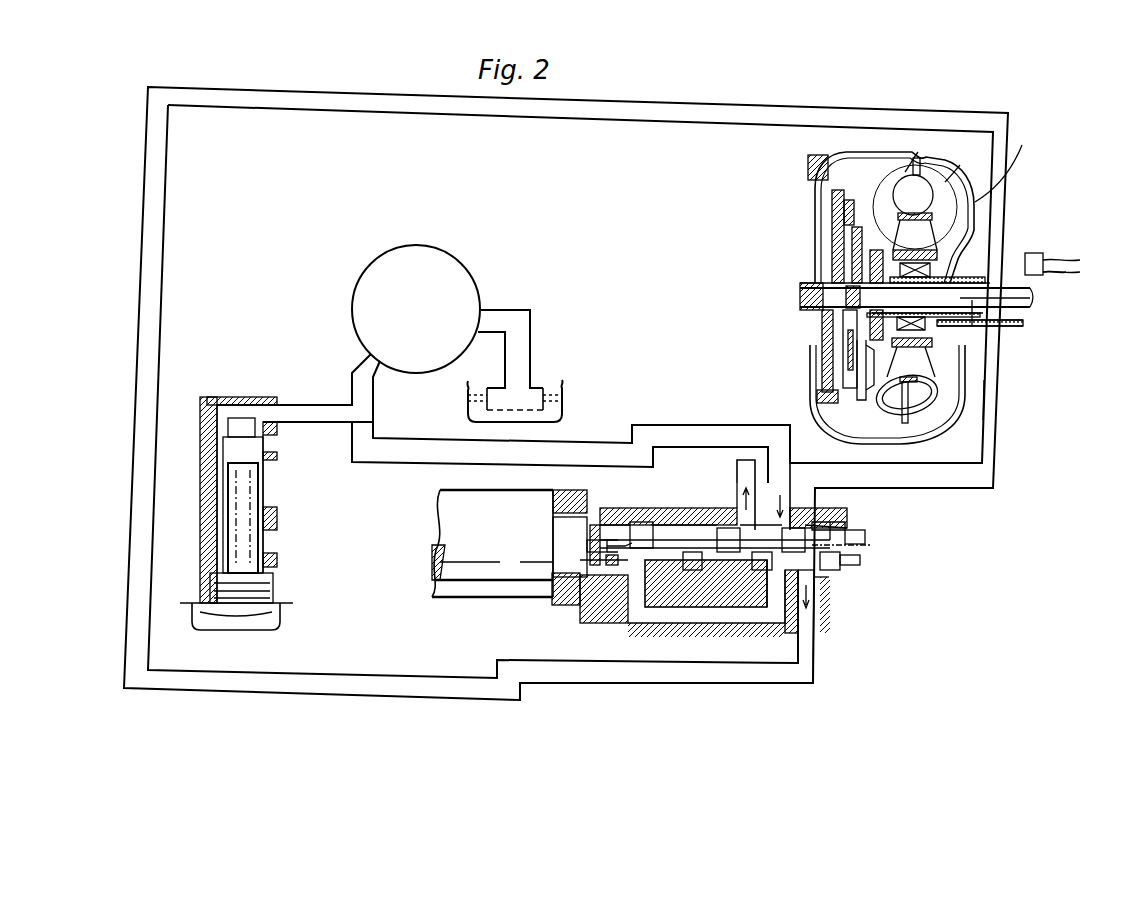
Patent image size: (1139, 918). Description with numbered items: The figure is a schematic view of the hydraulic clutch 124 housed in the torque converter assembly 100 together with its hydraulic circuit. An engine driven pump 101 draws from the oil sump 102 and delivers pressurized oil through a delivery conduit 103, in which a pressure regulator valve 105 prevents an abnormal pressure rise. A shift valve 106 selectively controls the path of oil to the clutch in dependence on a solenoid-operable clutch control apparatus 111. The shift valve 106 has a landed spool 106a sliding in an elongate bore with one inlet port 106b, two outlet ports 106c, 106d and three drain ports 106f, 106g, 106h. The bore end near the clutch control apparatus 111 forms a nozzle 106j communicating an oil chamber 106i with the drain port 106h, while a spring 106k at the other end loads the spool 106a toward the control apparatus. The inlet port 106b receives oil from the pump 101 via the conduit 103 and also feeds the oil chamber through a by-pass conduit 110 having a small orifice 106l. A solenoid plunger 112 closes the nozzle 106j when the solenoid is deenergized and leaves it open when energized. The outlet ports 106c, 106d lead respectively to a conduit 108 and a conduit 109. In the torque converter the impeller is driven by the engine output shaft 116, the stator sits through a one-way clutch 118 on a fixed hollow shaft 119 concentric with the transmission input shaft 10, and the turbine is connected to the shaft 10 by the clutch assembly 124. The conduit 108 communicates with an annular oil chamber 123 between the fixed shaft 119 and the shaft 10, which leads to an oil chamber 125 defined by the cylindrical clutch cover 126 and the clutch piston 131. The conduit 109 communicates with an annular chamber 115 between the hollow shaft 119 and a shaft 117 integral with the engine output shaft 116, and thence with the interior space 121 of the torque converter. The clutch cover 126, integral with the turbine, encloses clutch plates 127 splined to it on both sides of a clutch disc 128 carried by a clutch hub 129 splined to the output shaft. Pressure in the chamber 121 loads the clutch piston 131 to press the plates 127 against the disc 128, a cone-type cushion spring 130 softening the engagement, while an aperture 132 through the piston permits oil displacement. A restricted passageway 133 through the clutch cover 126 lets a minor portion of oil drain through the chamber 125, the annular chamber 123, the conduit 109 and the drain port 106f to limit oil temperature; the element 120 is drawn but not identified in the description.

The transmission input shaft 10 is at (1033, 298).
The torque converter assembly 100 is at (924, 283).
The engine driven pump 101 is at (447, 227).
The oil sump 102 is at (563, 395).
The delivery conduit 103 is at (404, 466).
The pressure regulator valve 105 is at (277, 508).
The shift valve 106 is at (684, 492).
The landed spool 106a is at (797, 530).
The inlet port 106b is at (790, 600).
The outlet port 106c is at (745, 510).
The outlet port 106d is at (815, 590).
The drain port 106f is at (868, 527).
The drain port 106g is at (707, 512).
The drain port 106h is at (617, 508).
The oil chamber 106i is at (612, 575).
The nozzle 106j is at (605, 540).
The spring 106k is at (872, 552).
The small orifice 106l is at (644, 610).
The conduit 108 is at (984, 400).
The conduit 109 is at (1008, 191).
The by-pass conduit 110 is at (708, 622).
The clutch control apparatus 111 is at (446, 600).
The solenoid plunger 112 is at (573, 588).
The annular chamber 115 is at (1010, 322).
The engine output shaft 116 is at (815, 283).
The shaft 117 is at (1038, 262).
The one-way clutch 118 is at (952, 272).
The fixed hollow shaft 119 is at (972, 264).
The lower housing 120 is at (978, 325).
The interior space of the torque converter 121 is at (870, 167).
The annular oil chamber 123 is at (985, 332).
The hydraulic clutch 124 is at (818, 208).
The oil chamber 125 is at (830, 333).
The cylindrical clutch cover 126 is at (838, 180).
The clutch plates 127 is at (845, 384).
The clutch disc 128 is at (822, 356).
The clutch hub 129 is at (890, 325).
The cone-type cushion spring 130 is at (840, 222).
The clutch piston 131 is at (828, 378).
The aperture 132 is at (826, 247).
The restricted passageway 133 is at (905, 422).